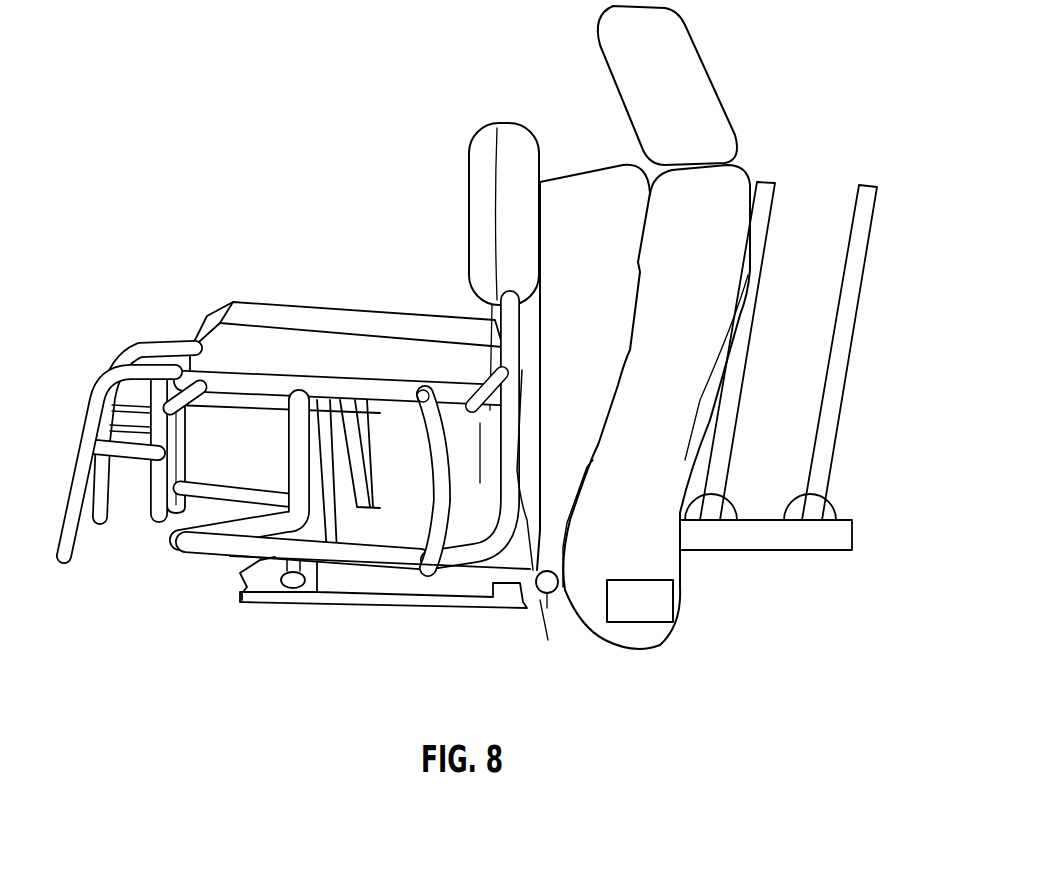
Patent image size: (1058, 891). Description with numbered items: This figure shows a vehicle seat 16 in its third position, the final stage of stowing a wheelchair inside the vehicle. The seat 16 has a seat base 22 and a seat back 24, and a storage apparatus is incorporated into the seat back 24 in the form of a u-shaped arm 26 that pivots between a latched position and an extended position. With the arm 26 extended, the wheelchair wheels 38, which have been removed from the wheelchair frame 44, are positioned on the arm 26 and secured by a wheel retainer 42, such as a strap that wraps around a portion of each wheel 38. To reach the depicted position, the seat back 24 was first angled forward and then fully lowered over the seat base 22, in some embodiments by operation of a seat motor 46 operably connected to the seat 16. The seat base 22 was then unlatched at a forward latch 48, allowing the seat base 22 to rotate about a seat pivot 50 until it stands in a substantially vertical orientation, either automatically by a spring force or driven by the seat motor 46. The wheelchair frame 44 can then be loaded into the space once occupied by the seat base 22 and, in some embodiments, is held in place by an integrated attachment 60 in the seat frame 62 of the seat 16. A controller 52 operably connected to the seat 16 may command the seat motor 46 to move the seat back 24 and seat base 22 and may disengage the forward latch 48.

The seat 16 is at (203, 255).
The seat base 22 is at (603, 176).
The seat back 24 is at (740, 178).
The u-shaped arm 26 is at (818, 537).
The wheelchair wheels 38 is at (763, 266).
The wheel retainer 42 is at (825, 499).
The wheelchair frame 44 is at (90, 408).
The seat motor 46 is at (680, 600).
The forward latch 48 is at (283, 595).
The seat pivot 50 is at (563, 627).
The controller 52 is at (637, 623).
The integrated attachment 60 is at (320, 593).
The seat frame 62 is at (415, 607).